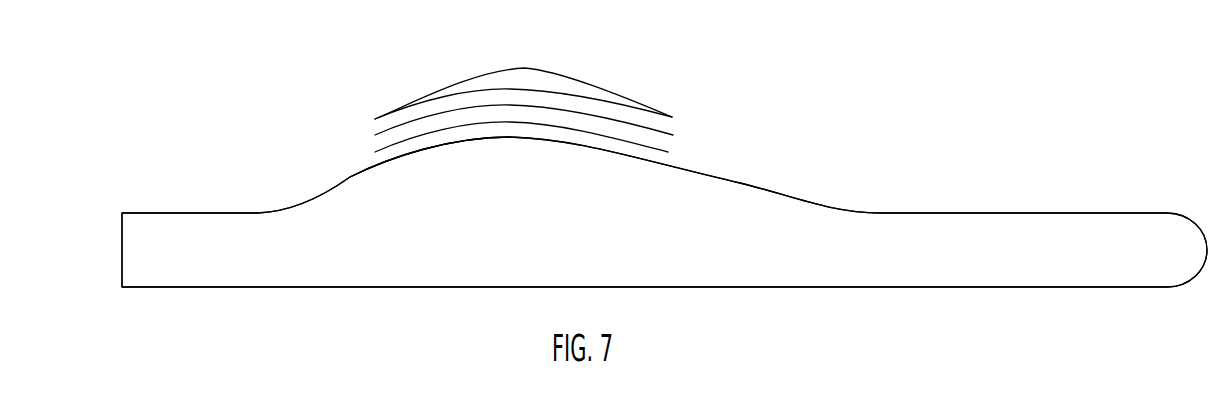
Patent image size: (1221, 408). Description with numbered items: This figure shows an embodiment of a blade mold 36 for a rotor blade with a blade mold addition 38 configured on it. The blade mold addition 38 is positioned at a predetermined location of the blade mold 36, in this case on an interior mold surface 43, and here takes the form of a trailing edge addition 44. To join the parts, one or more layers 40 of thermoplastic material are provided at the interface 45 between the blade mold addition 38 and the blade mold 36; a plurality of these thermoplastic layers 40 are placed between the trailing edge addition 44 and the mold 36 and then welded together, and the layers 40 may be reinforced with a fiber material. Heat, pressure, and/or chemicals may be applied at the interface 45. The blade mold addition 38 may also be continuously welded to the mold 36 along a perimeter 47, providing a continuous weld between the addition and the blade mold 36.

The blade mold 36 is at (829, 205).
The blade mold addition 38 is at (558, 97).
The layers of thermoplastic material 40 is at (673, 135).
The interior mold surface 43 is at (556, 228).
The trailing edge addition 44 is at (572, 80).
The interface 45 is at (367, 161).
The perimeter 47 is at (672, 117).